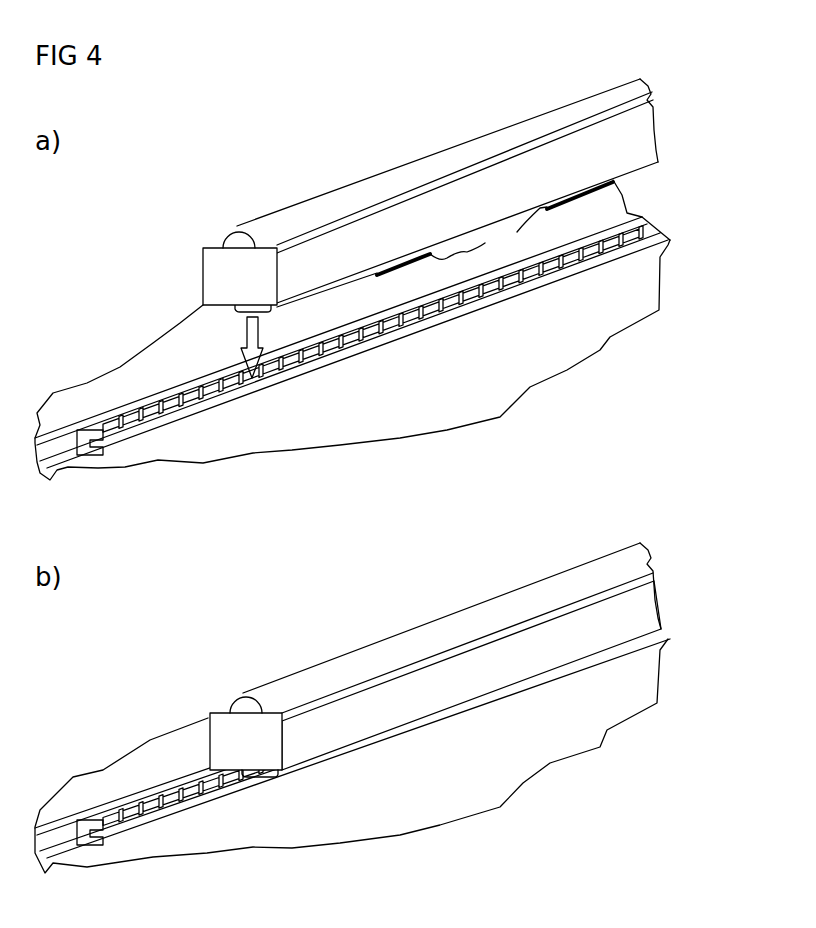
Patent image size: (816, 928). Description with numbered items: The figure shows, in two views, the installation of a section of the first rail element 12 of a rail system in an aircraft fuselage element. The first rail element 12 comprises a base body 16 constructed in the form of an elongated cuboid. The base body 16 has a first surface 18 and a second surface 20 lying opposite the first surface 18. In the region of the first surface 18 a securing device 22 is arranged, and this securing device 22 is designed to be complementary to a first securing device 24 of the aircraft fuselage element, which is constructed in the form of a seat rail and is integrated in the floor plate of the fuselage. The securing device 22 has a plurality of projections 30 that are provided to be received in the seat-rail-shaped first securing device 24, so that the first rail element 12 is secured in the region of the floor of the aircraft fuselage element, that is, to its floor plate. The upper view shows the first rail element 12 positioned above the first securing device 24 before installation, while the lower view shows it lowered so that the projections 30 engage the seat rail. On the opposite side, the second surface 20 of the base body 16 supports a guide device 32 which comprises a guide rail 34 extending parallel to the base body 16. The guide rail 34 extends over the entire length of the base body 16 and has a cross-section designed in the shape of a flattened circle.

The first rail element 12 is at (470, 122).
The base body 16 is at (645, 141).
The first surface 18 is at (323, 285).
The second surface 20 is at (220, 245).
The securing device 22 is at (622, 187).
The first securing device 24 is at (385, 345).
The projections 30 is at (223, 330).
The guide device 32 is at (416, 148).
The guide rail 34 is at (308, 203).